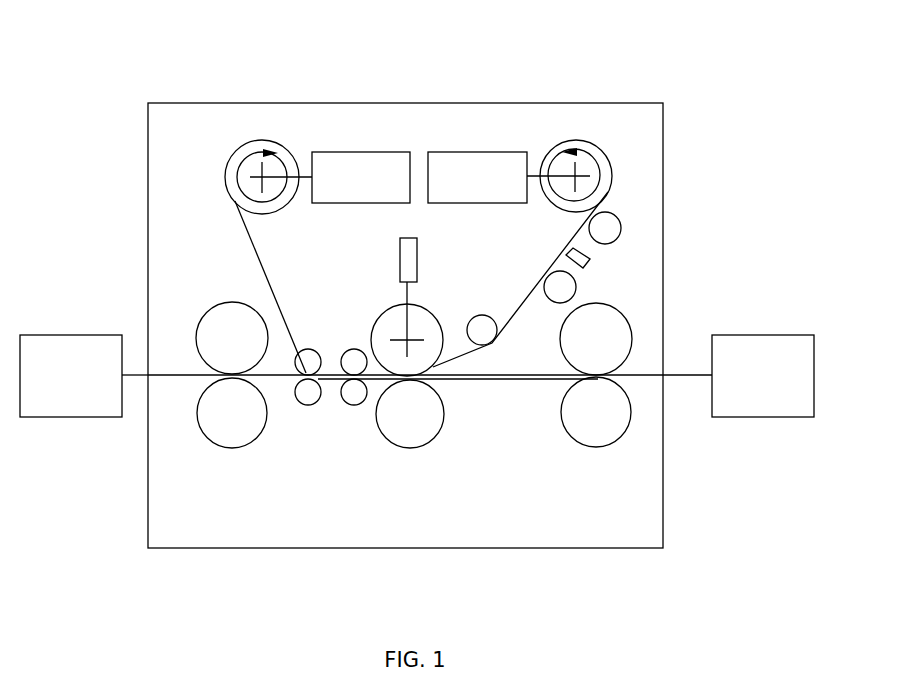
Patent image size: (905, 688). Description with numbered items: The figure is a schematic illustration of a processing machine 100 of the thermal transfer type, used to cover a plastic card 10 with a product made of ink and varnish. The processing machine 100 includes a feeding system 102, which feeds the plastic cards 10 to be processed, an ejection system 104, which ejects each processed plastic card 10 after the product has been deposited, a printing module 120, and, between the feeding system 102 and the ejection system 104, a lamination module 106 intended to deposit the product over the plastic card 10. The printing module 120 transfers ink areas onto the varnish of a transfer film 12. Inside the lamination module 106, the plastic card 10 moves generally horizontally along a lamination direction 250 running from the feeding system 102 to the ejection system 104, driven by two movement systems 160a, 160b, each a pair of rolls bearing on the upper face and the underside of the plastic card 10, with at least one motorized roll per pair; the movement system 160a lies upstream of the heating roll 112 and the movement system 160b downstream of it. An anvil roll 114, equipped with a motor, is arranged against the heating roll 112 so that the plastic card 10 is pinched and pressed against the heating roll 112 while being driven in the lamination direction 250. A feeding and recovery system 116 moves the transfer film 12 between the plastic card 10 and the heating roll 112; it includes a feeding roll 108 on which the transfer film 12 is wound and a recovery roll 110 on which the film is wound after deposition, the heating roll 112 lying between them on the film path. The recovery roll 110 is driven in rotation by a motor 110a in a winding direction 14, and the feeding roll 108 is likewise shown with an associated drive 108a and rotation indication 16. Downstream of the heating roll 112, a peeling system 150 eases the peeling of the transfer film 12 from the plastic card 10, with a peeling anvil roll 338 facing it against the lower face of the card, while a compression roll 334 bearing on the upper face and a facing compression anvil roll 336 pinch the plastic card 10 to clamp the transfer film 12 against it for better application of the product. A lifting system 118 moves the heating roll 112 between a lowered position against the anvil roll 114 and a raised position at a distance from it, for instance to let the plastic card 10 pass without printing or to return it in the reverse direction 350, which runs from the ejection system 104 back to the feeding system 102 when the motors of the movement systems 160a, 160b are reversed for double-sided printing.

The plastic card 10 is at (476, 379).
The transfer film 12 is at (248, 240).
The direction of winding 14 is at (224, 158).
The second roller leader region 16 is at (572, 142).
The processing machine 100 is at (708, 88).
The feeding system 102 is at (791, 387).
The ejection system 104 is at (106, 387).
The lamination module 106 is at (578, 93).
The feeding roll 108 is at (602, 173).
The second roller drive 108a is at (509, 191).
The recovery roll 110 is at (258, 205).
The motor 110a is at (393, 191).
The heating roll 112 is at (420, 325).
The anvil roll 114 is at (420, 428).
The feeding and recovery system 116 is at (158, 85).
The lifting system 118 is at (400, 272).
The printing module 120 is at (590, 255).
The peeling system 150 is at (304, 356).
The movement system 160a is at (672, 443).
The movement system 160b is at (128, 447).
The lamination direction 250 is at (323, 67).
The compression roll 334 is at (357, 364).
The compression anvil roll 336 is at (344, 404).
The peeling anvil roll 338 is at (302, 402).
The reverse direction 350 is at (570, 592).